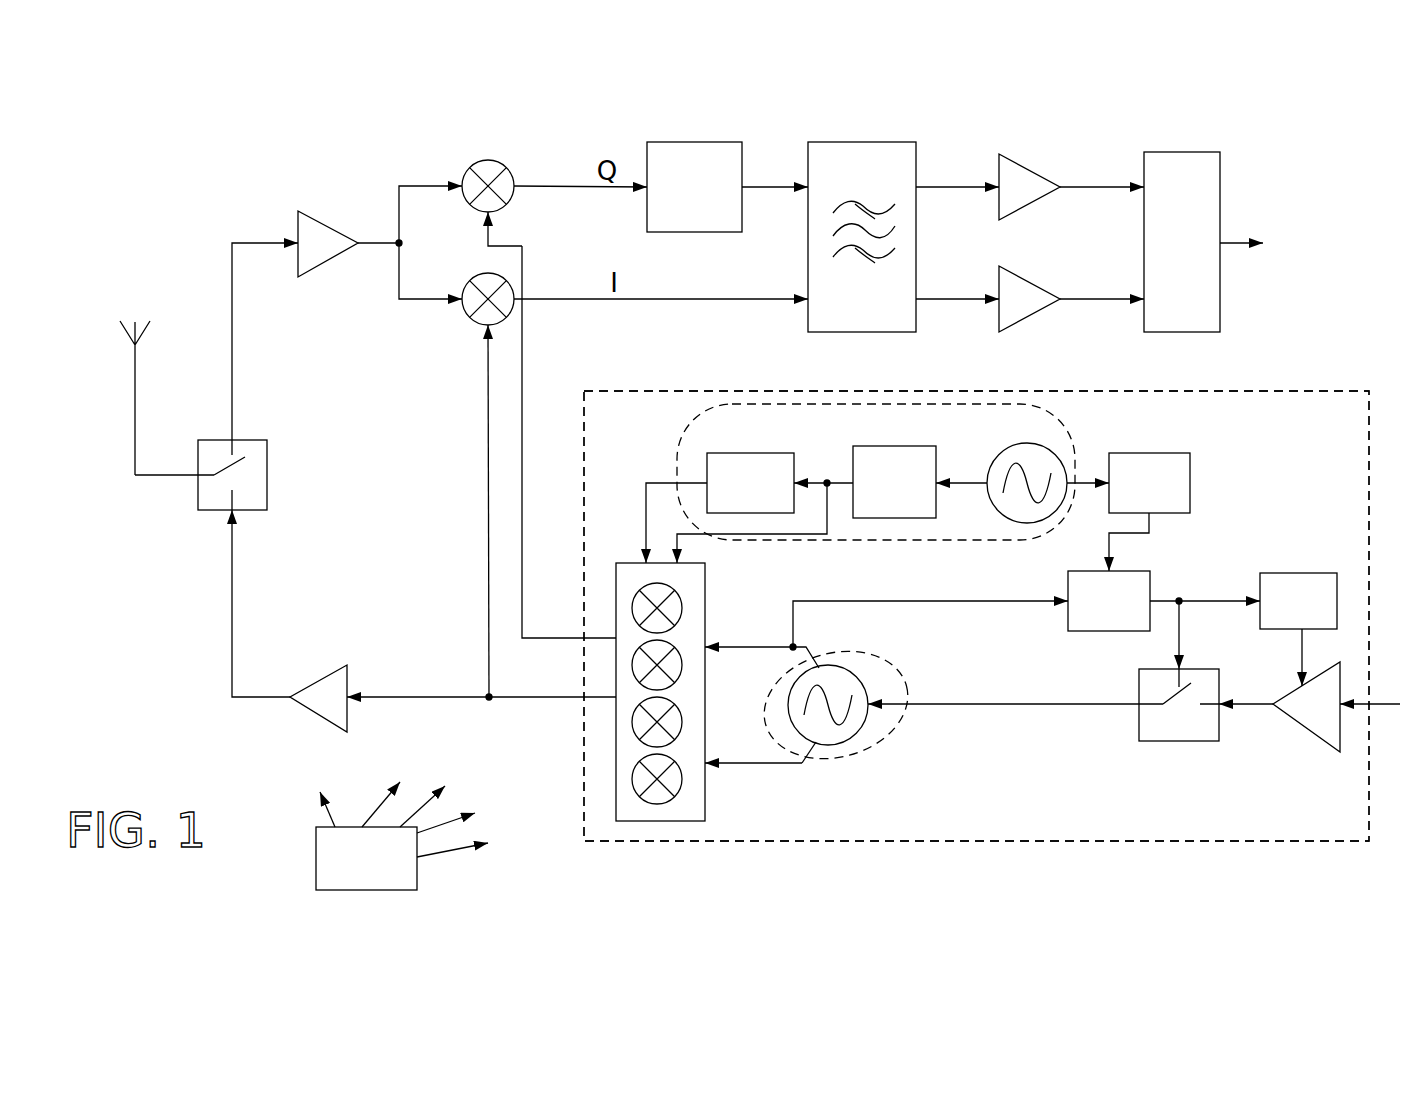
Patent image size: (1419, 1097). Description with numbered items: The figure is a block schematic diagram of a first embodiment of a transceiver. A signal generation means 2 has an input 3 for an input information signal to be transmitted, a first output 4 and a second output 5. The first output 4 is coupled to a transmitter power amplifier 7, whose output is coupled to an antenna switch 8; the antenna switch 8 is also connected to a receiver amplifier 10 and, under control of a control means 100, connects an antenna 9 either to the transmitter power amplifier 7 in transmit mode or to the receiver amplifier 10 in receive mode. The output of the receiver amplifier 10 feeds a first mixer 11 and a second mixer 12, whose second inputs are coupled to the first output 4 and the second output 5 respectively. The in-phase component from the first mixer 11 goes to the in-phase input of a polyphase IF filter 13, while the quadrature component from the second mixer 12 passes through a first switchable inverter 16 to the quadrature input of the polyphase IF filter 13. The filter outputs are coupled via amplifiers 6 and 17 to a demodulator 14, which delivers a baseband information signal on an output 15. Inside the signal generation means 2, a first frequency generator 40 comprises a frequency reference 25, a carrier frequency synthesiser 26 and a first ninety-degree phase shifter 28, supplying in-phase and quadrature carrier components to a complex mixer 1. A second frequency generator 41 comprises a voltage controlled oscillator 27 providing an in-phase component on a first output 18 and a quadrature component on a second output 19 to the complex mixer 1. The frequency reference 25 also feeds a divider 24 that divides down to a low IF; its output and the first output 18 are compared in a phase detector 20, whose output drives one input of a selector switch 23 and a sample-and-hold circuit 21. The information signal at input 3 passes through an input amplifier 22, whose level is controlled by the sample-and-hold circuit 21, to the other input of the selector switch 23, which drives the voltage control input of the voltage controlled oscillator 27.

The complex mixer 1 is at (588, 838).
The signal generation means 2 is at (1295, 390).
The input 3 is at (1392, 706).
The first output 4 is at (570, 698).
The second output 5 is at (573, 637).
The amplifier 6 is at (1020, 318).
The transmitter power amplifier 7 is at (327, 672).
The antenna switch 8 is at (215, 511).
The antenna 9 is at (148, 323).
The receiver amplifier 10 is at (317, 227).
The first mixer 11 is at (467, 311).
The second mixer 12 is at (503, 167).
The polyphase IF filter 13 is at (826, 143).
The demodulator 14 is at (1182, 242).
The output 15 is at (1230, 240).
The first switchable inverter 16 is at (658, 143).
The amplifier 17 is at (1020, 160).
The first output 18 is at (760, 651).
The second output 19 is at (793, 767).
The phase detector 20 is at (1164, 601).
The sample-and-hold circuit 21 is at (1298, 629).
The input amplifier 22 is at (1300, 730).
The selector switch 23 is at (1153, 744).
The divider 24 is at (1190, 473).
The frequency reference 25 is at (990, 455).
The carrier frequency synthesiser 26 is at (865, 482).
The voltage controlled oscillator 27 is at (855, 745).
The first 90° phase shifter 28 is at (707, 468).
The first frequency generator 40 is at (1060, 432).
The second frequency generator 41 is at (908, 670).
The control means 100 is at (402, 836).